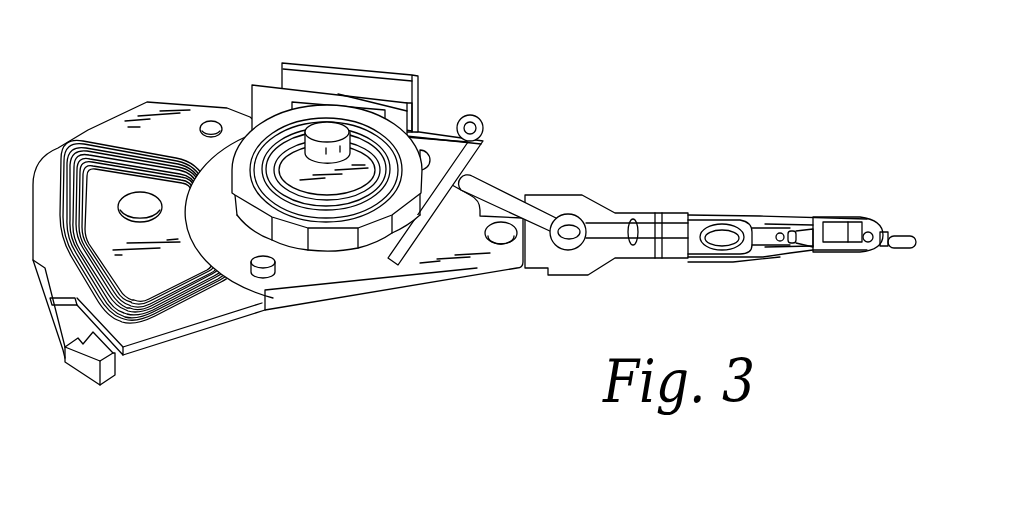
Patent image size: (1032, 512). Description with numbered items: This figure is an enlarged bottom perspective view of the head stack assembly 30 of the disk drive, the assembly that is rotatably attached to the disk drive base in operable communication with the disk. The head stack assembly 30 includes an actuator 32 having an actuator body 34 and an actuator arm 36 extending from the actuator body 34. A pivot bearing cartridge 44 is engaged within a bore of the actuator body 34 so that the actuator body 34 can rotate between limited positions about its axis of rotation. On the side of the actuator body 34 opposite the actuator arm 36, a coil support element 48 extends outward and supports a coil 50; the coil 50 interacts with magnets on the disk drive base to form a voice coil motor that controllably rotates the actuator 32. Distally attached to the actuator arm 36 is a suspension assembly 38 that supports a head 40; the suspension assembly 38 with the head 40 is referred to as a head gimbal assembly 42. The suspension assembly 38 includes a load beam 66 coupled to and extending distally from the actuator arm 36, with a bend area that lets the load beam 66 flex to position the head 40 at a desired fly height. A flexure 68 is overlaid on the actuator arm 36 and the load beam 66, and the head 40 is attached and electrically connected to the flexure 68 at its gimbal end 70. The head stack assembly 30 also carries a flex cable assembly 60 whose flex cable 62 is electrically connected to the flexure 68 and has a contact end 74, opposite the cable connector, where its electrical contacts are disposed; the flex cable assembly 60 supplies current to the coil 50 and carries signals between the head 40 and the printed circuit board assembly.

The head stack assembly 30 is at (150, 62).
The actuator 32 is at (282, 302).
The actuator body 34 is at (323, 287).
The actuator arm 36 is at (462, 264).
The suspension assembly 38 is at (731, 213).
The head 40 is at (837, 225).
The head gimbal assembly 42 is at (746, 215).
The pivot bearing cartridge 44 is at (332, 185).
The coil support element 48 is at (53, 162).
The coil 50 is at (100, 146).
The flex cable assembly 60 is at (296, 72).
The flex cable 62 is at (338, 66).
The load beam 66 is at (732, 262).
The flexure 68 is at (498, 192).
The gimbal end 70 is at (772, 217).
The contact end 74 is at (397, 80).